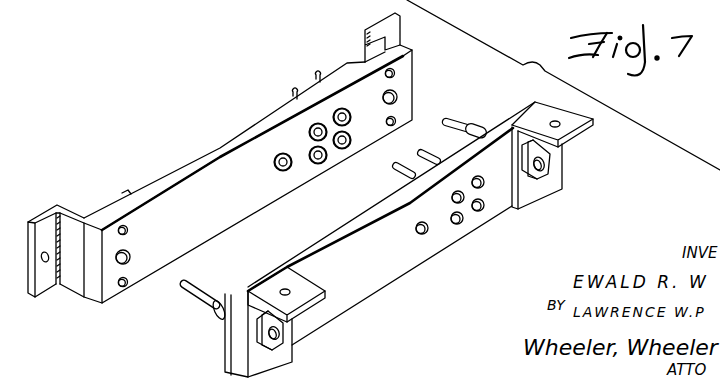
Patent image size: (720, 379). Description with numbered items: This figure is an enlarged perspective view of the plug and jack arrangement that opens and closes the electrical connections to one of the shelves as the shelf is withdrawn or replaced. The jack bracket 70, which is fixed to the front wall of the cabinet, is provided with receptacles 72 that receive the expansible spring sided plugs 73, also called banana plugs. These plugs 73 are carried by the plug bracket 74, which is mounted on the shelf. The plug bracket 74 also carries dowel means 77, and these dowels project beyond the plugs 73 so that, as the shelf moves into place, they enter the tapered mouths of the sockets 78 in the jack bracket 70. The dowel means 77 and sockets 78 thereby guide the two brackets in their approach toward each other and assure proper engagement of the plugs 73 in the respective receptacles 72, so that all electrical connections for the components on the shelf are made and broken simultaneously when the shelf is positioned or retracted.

The jack bracket 70 is at (153, 187).
The receptacles 72 is at (290, 172).
The expansible spring sided plugs 73 is at (366, 203).
The plug bracket 74 is at (433, 249).
The dowel means 77 is at (460, 125).
The sockets 78 is at (132, 251).